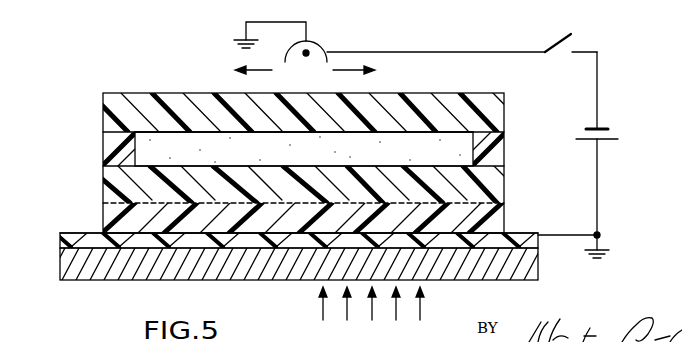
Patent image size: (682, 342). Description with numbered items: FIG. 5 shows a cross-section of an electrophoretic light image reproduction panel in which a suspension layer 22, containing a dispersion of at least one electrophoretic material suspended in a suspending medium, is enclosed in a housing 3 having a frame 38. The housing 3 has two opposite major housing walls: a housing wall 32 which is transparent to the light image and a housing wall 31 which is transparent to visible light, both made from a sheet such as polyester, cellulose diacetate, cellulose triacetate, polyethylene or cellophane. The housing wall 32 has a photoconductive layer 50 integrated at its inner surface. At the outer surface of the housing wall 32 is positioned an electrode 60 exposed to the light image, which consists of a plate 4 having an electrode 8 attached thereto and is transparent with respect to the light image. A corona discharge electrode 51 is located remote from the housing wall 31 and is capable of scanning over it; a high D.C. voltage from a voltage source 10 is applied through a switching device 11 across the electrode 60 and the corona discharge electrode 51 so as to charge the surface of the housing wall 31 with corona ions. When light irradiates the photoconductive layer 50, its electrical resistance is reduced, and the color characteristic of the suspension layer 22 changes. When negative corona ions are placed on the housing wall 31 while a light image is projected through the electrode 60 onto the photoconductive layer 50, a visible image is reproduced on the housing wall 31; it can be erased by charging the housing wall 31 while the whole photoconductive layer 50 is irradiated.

The housing 3 is at (103, 92).
The suspension layer 22 is at (190, 150).
The housing wall 31 is at (102, 110).
The frame 38 is at (102, 150).
The photoconductive layer 50 is at (102, 188).
The housing wall 32 is at (102, 216).
The electrode 60 is at (60, 234).
The electrode 8 is at (45, 250).
The plate 4 is at (50, 275).
The corona discharge electrode 51 is at (310, 50).
The switching device 11 is at (552, 47).
The voltage source 10 is at (603, 128).